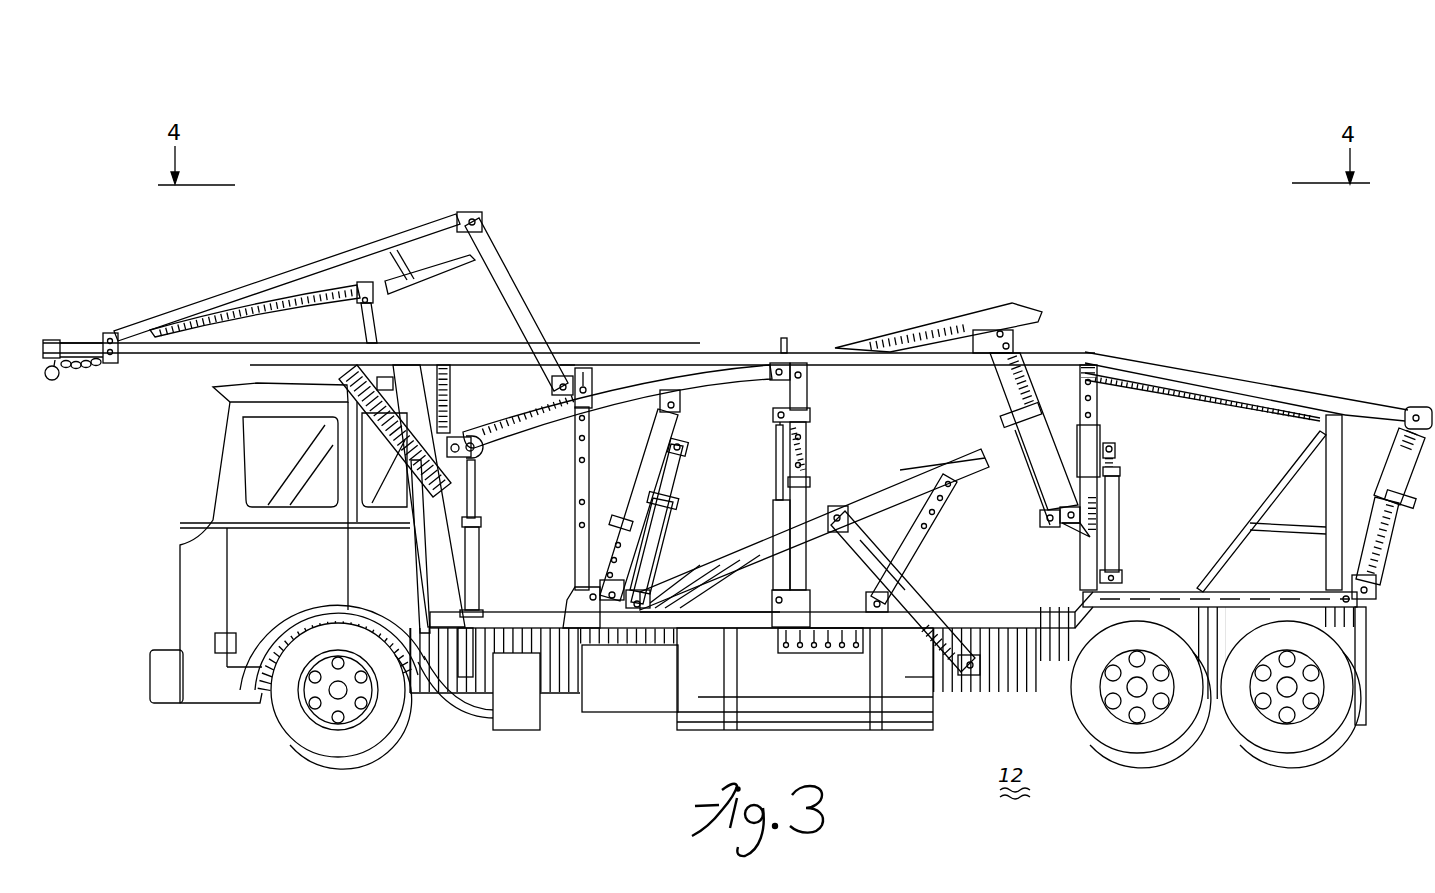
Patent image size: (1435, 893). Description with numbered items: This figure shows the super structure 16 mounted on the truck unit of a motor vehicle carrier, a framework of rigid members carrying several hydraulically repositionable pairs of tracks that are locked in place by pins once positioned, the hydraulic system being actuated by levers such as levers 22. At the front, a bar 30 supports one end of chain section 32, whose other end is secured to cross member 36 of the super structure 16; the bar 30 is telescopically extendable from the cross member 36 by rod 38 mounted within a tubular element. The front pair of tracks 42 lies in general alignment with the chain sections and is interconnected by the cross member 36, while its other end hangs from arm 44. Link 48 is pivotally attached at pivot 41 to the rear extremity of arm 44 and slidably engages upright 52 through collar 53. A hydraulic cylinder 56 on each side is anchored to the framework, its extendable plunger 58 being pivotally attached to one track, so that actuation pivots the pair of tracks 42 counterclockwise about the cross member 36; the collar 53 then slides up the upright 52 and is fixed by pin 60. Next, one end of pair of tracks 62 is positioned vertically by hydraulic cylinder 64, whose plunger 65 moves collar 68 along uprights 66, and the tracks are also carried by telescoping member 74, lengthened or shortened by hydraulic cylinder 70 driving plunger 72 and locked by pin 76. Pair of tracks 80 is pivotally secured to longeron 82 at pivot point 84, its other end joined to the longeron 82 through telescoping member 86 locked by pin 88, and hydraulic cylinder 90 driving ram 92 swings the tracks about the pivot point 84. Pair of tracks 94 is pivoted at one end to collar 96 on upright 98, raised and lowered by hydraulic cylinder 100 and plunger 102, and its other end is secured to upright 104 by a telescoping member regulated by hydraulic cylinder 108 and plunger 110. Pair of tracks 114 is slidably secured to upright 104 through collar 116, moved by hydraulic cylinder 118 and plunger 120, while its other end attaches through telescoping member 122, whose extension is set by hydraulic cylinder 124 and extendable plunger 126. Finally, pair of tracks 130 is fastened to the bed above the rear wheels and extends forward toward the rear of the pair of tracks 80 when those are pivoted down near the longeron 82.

The super structure 16 is at (784, 338).
The levers 22 is at (830, 650).
The bar 30 is at (58, 380).
The chain section 32 is at (80, 368).
The cross member 36 is at (112, 362).
The rod 38 is at (78, 340).
The pivot 41 is at (487, 214).
The pair of tracks 42 is at (291, 297).
The arm 44 is at (338, 258).
The link 48 is at (535, 292).
The upright 52 is at (573, 525).
The collar 53 is at (598, 368).
The hydraulic cylinder 56 is at (408, 493).
The extendable plunger 58 is at (380, 318).
The pin 60 is at (585, 378).
The pair of tracks 62 is at (715, 380).
The hydraulic cylinder 64 is at (481, 540).
The plunger 65 is at (478, 495).
The uprights 66 is at (455, 438).
The collar 68 is at (471, 442).
The hydraulic cylinder 70 is at (665, 520).
The plunger 72 is at (684, 490).
The telescoping member 74 is at (660, 452).
The pin 76 is at (638, 510).
The pair of tracks 80 is at (770, 608).
The longeron 82 is at (685, 610).
The pivot point 84 is at (680, 560).
The telescoping member 86 is at (905, 550).
The pin 88 is at (945, 518).
The hydraulic cylinder 90 is at (925, 600).
The ram 92 is at (868, 490).
The pair of tracks 94 is at (925, 320).
The collar 96 is at (818, 380).
The upright 98 is at (810, 470).
The hydraulic cylinder 100 is at (772, 520).
The plunger 102 is at (772, 458).
The upright 104 is at (1097, 550).
The hydraulic cylinder 108 is at (1030, 500).
The plunger 110 is at (993, 367).
The pair of tracks 114 is at (1278, 387).
The collar 116 is at (1107, 445).
The hydraulic cylinder 118 is at (1121, 508).
The plunger 120 is at (1120, 462).
The telescoping member 122 is at (1378, 490).
The hydraulic cylinder 124 is at (1385, 560).
The extendable plunger 126 is at (1378, 445).
The pair of tracks 130 is at (1062, 598).